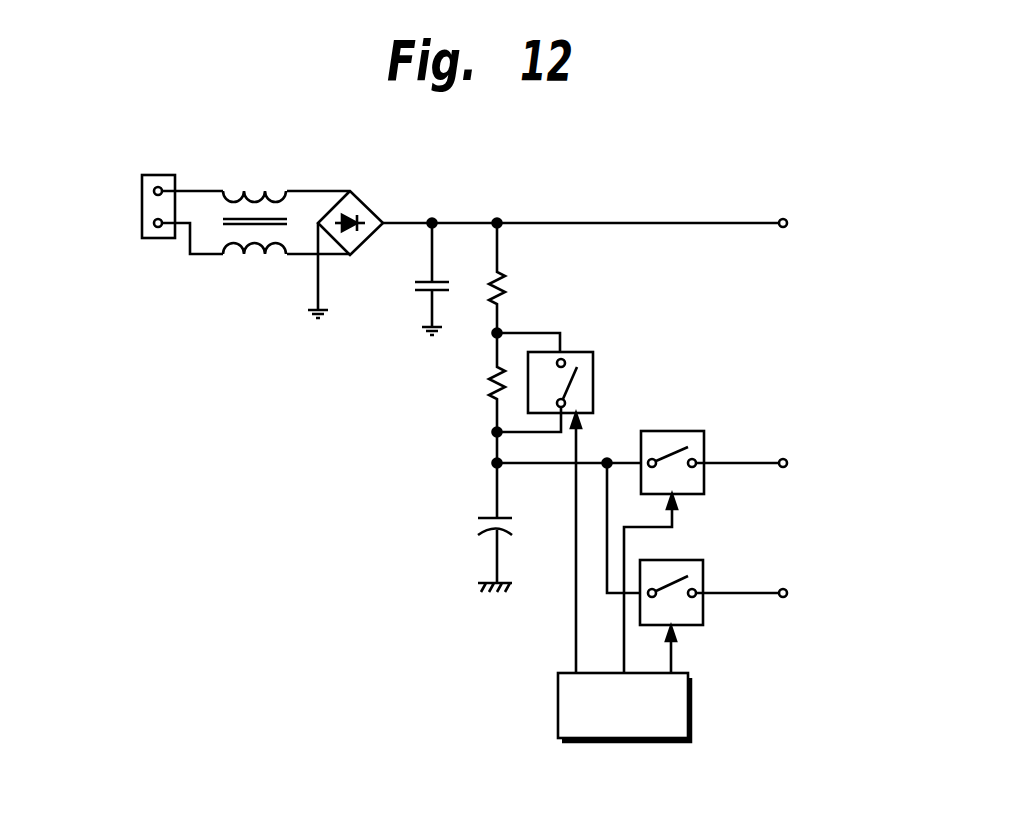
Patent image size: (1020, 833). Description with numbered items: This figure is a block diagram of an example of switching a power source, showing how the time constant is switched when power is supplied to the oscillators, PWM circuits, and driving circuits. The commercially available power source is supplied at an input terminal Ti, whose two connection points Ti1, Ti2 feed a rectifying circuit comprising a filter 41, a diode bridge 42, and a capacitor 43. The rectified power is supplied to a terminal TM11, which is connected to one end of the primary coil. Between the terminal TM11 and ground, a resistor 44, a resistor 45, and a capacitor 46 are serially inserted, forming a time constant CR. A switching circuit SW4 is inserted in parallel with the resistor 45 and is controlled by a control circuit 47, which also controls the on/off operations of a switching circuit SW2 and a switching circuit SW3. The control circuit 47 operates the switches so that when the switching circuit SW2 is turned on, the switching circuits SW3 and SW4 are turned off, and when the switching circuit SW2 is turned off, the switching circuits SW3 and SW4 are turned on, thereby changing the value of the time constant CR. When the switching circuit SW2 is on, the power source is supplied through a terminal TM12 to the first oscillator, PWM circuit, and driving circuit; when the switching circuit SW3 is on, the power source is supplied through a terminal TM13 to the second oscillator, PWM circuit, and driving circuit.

The input terminal Ti is at (160, 175).
The input terminal Ti1 is at (142, 191).
The input terminal Ti2 is at (142, 223).
The filter 41 is at (251, 277).
The diode bridge 42 is at (370, 202).
The capacitor 43 is at (413, 286).
The resistor 44 is at (512, 286).
The resistor 45 is at (480, 381).
The capacitor 46 is at (478, 527).
The control circuit 47 is at (693, 706).
The switching circuit SW2 is at (668, 431).
The switching circuit SW3 is at (721, 542).
The switching circuit SW4 is at (608, 333).
The terminal TM11 is at (788, 223).
The terminal TM12 is at (788, 463).
The terminal TM13 is at (788, 593).